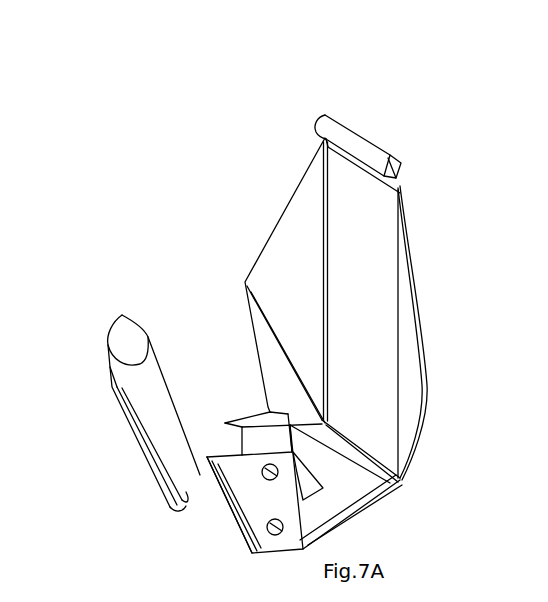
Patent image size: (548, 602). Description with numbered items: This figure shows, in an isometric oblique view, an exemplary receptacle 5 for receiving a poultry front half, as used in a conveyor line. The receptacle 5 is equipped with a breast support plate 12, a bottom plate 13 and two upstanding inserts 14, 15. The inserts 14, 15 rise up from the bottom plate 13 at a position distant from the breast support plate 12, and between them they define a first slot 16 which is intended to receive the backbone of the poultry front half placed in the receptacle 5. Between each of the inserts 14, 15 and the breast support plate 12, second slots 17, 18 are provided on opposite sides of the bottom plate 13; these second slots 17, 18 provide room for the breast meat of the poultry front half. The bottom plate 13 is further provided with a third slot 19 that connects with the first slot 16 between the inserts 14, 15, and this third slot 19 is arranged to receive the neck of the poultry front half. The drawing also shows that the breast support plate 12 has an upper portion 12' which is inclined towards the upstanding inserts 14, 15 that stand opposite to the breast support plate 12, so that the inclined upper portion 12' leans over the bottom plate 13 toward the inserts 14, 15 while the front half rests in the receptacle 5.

The receptacle 5 is at (214, 262).
The breast support plate 12 is at (315, 300).
The upper portion 12' is at (370, 101).
The bottom plate 13 is at (335, 526).
The upstanding insert 14 is at (238, 441).
The upstanding insert 15 is at (116, 374).
The first slot 16 is at (188, 503).
The second slot 17 is at (365, 475).
The second slot 18 is at (177, 312).
The third slot 19 is at (208, 518).